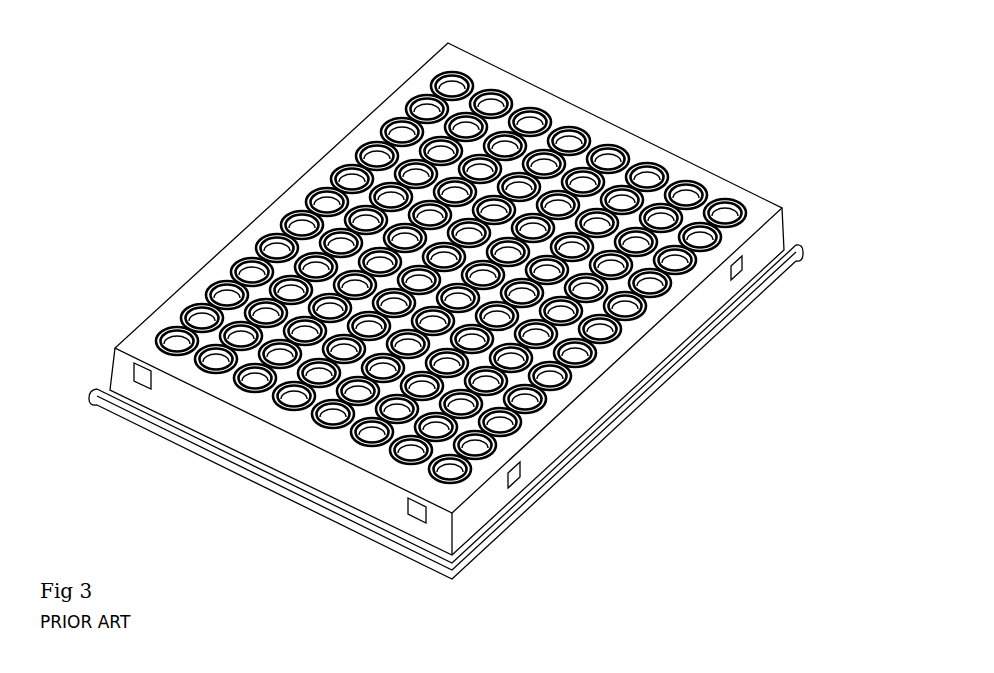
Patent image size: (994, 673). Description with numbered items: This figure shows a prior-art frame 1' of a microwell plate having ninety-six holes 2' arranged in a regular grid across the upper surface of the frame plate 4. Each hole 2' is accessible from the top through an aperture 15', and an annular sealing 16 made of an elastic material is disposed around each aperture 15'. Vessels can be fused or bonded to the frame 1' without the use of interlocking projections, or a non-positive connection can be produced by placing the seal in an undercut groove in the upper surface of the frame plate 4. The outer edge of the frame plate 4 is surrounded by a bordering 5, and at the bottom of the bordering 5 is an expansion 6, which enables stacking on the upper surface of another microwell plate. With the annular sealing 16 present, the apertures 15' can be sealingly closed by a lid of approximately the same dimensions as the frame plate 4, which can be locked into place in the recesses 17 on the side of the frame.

The frame 1' is at (473, 294).
The hole 2' is at (748, 191).
The frame plate 4 is at (448, 278).
The bordering 5 is at (583, 423).
The expansion 6 is at (648, 383).
The aperture 15' is at (525, 63).
The annular sealing 16 is at (511, 99).
The recess 17 is at (737, 264).